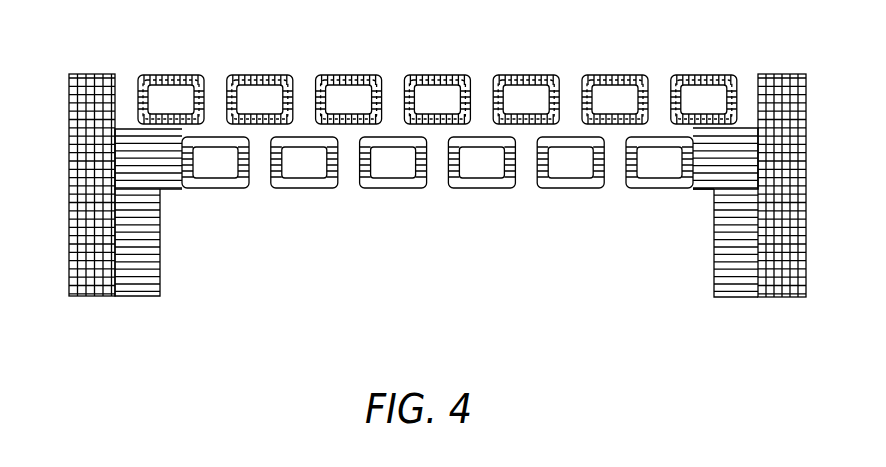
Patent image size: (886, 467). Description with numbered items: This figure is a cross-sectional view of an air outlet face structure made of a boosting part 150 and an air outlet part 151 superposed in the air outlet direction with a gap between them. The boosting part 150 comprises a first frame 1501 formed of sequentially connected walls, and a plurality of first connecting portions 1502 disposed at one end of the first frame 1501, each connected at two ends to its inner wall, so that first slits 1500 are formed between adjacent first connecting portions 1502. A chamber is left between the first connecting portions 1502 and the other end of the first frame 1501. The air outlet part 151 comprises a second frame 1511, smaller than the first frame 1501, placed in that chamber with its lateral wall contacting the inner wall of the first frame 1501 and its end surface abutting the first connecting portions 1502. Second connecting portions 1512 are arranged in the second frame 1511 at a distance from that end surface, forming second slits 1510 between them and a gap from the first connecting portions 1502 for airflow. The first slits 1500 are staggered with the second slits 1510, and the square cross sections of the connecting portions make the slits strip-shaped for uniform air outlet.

The boosting part 150 is at (735, 280).
The first slits 1500 is at (349, 185).
The first frame 1501 is at (720, 285).
The first connecting portions 1502 is at (243, 183).
The air outlet part 151 is at (89, 72).
The second frame 1511 is at (73, 116).
The second slits 1510 is at (302, 70).
The second connecting portions 1512 is at (187, 72).